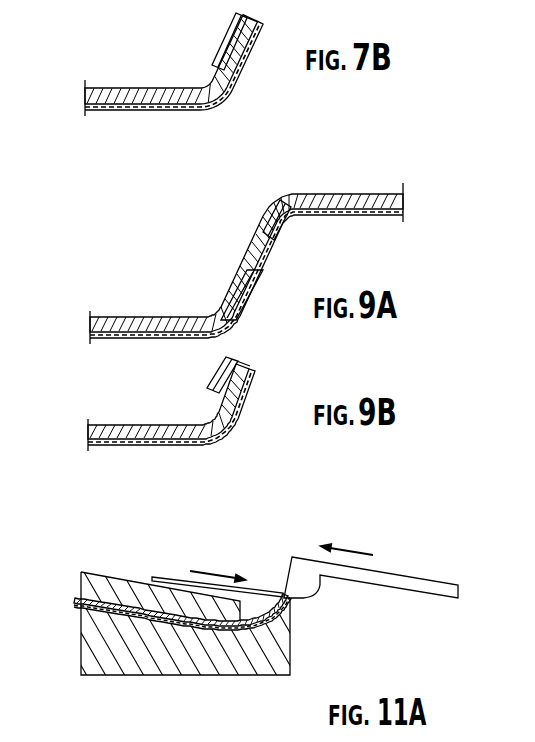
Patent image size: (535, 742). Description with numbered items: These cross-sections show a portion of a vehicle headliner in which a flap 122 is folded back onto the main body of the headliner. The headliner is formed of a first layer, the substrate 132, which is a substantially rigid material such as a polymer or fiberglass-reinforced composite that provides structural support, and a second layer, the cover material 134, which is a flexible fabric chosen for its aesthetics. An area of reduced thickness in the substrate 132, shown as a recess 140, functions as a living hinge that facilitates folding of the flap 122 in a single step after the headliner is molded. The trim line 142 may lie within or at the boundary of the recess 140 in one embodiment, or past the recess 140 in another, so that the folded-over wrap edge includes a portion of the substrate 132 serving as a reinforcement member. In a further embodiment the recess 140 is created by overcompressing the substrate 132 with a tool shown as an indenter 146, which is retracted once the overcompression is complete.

In FIG. 7B, the flap 122 is at (203, 30).
In FIG. 9B, the flap 122 is at (210, 374).
In FIG. 7B, the substrate 132 is at (106, 88).
In FIG. 9A, the substrate 132 is at (131, 316).
In FIG. 9B, the substrate 132 is at (113, 424).
In FIG. 11A, the substrate 132 is at (80, 597).
In FIG. 7B, the cover material 134 is at (222, 108).
In FIG. 9A, the cover material 134 is at (113, 340).
In FIG. 9B, the cover material 134 is at (183, 447).
In FIG. 11A, the cover material 134 is at (80, 603).
In FIG. 9A, the recess 140 is at (240, 246).
In FIG. 11A, the recess 140 is at (287, 598).
In FIG. 9A, the trim line 142 is at (270, 216).
In FIG. 11A, the indenter 146 is at (153, 577).